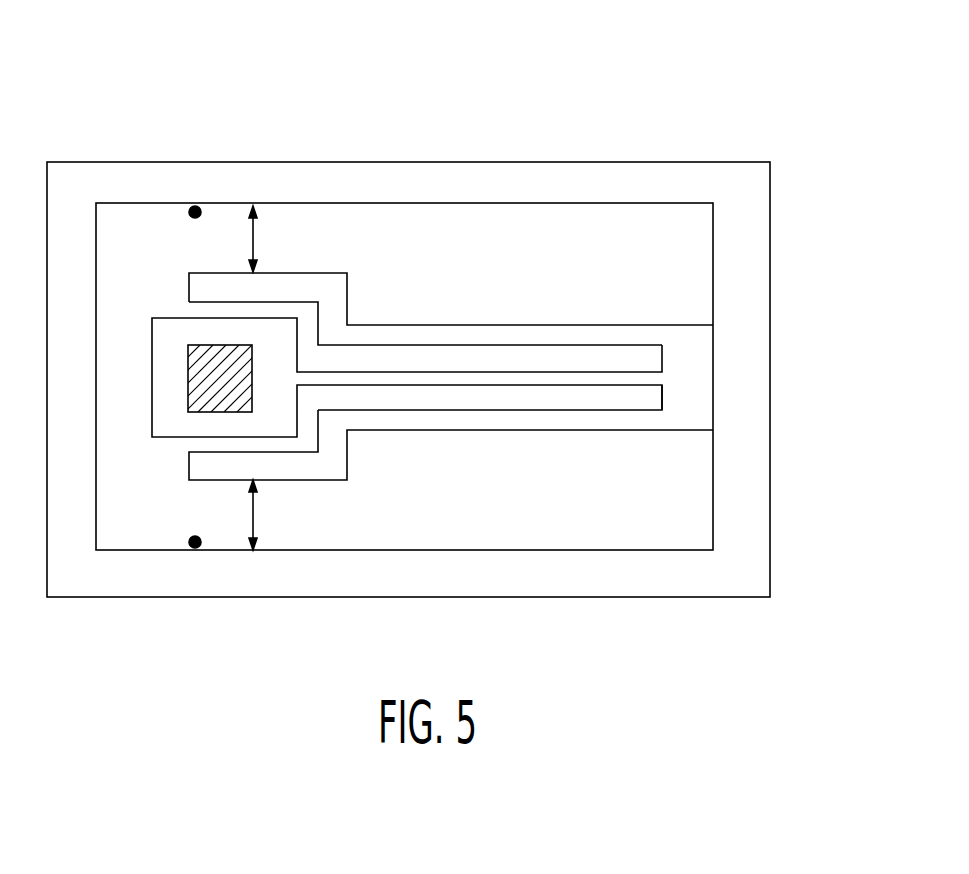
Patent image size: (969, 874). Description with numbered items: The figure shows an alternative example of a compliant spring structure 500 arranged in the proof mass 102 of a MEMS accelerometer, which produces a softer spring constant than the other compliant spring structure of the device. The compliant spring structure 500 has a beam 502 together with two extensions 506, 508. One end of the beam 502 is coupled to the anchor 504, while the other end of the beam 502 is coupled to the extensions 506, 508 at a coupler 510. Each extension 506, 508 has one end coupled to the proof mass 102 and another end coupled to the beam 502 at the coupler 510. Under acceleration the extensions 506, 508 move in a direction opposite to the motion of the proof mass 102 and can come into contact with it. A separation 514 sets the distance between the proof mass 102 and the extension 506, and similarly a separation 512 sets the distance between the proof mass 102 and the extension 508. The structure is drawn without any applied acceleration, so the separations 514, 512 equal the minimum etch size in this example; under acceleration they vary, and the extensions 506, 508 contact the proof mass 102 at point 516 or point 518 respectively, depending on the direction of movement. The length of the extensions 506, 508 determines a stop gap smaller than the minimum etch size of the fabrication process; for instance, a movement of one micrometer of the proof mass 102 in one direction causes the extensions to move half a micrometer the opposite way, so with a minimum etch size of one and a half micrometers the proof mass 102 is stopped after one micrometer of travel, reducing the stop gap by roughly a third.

The compliant spring structure 500 is at (553, 44).
The proof mass 102 is at (770, 240).
The beam 502 is at (560, 343).
The anchor 504 is at (237, 377).
The extension 506 is at (348, 473).
The extension 508 is at (348, 290).
The coupler 510 is at (657, 378).
The separation 512 is at (257, 240).
The separation 514 is at (257, 518).
The point 516 is at (194, 535).
The point 518 is at (193, 220).